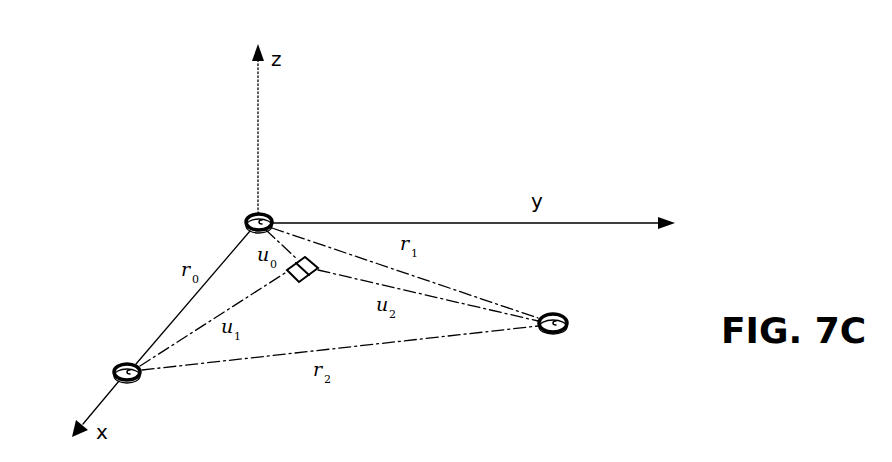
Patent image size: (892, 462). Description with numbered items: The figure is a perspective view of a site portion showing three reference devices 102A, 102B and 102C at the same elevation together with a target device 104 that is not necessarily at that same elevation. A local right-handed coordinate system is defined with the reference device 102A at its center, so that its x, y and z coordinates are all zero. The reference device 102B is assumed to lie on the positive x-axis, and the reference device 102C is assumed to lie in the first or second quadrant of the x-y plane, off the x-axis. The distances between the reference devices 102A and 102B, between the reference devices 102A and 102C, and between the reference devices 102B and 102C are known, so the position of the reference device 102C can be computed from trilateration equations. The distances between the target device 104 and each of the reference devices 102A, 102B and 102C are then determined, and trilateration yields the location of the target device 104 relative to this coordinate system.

The reference device 102A is at (246, 220).
The reference device 102B is at (114, 366).
The reference device 102C is at (565, 332).
The target device 104 is at (298, 284).